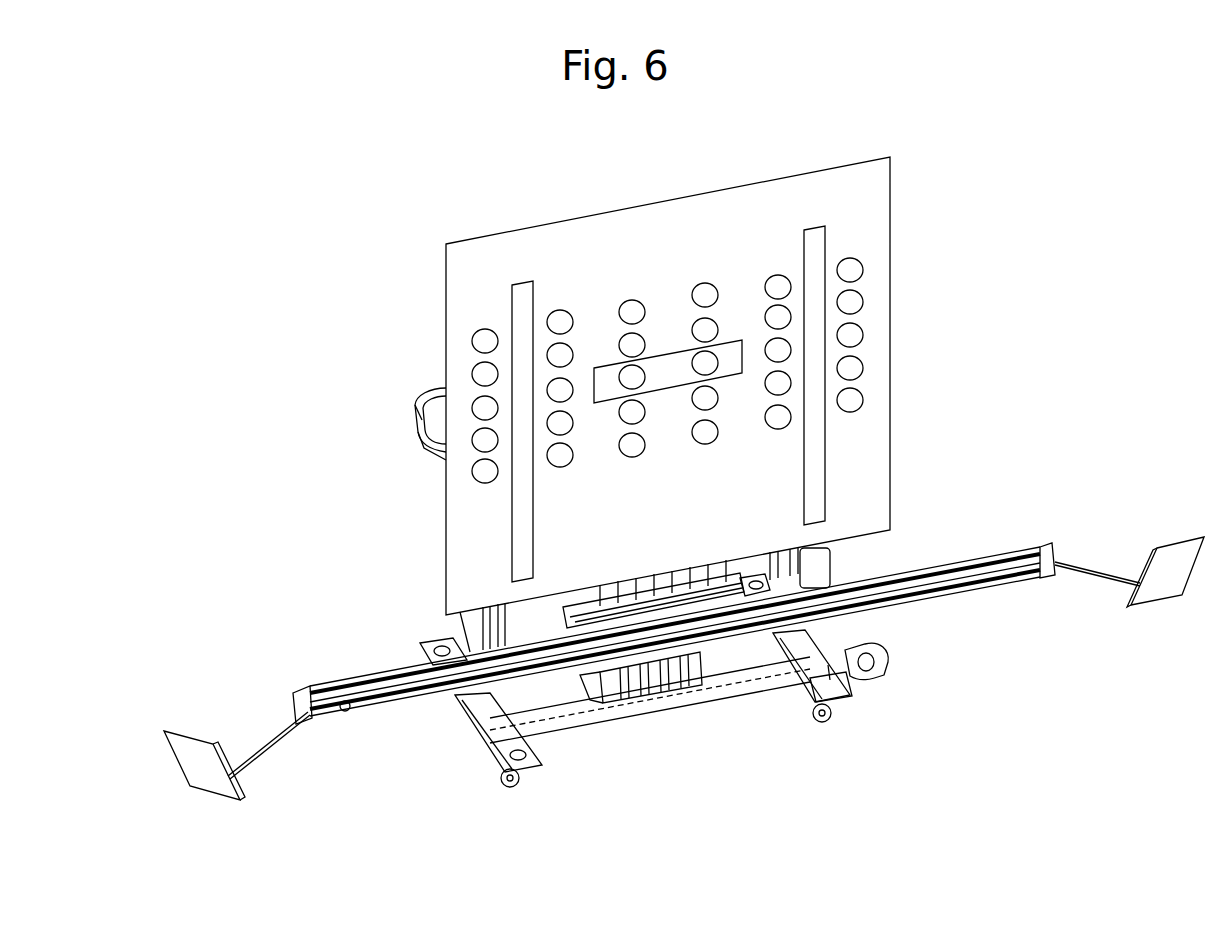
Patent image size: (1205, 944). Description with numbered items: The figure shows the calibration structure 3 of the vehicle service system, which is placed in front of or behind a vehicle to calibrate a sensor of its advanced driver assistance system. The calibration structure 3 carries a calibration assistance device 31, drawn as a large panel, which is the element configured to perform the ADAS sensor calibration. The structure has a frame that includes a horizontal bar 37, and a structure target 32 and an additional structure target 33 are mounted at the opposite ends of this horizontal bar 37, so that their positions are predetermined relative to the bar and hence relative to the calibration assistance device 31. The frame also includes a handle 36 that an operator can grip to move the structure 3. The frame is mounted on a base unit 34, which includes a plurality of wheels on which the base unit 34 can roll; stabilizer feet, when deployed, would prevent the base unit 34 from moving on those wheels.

The calibration structure 3 is at (433, 257).
The calibration assistance device 31 is at (875, 228).
The structure target 32 is at (195, 757).
The additional structure target 33 is at (1172, 573).
The base unit 34 is at (590, 720).
The handle 36 is at (421, 392).
The horizontal bar 37 is at (962, 592).